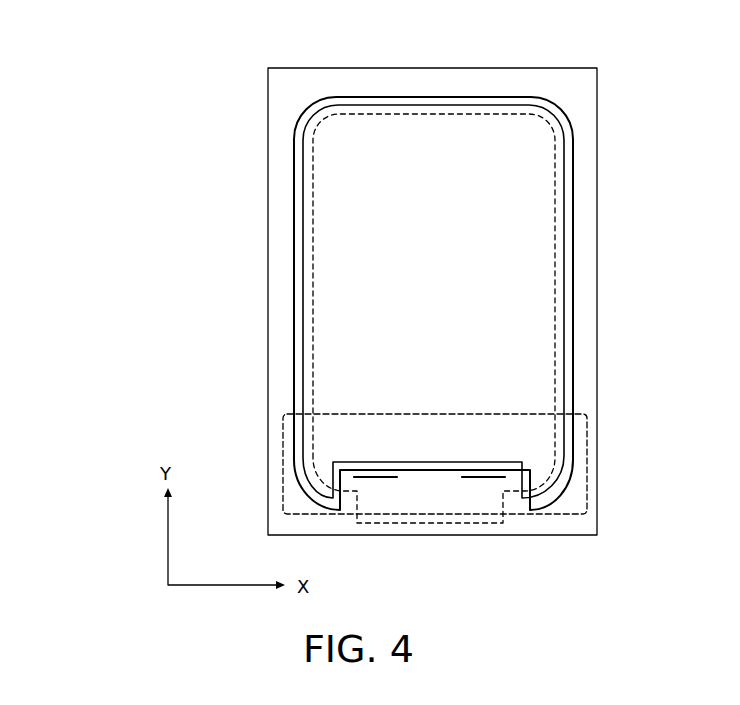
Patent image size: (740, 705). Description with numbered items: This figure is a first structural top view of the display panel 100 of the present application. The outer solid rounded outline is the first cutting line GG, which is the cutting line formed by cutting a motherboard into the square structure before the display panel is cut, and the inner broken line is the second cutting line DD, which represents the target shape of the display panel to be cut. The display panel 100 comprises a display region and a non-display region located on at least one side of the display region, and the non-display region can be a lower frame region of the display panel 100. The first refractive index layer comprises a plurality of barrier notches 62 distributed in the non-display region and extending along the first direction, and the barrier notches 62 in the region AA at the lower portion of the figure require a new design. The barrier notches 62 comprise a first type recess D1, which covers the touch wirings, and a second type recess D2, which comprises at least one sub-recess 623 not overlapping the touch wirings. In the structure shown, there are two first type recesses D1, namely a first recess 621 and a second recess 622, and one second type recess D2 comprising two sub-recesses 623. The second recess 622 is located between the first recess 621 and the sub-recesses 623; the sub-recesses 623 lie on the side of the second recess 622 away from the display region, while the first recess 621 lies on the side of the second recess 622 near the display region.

The display panel 100 is at (258, 40).
The barrier notches 62 is at (97, 337).
The first recess 621 is at (303, 231).
The second recess 622 is at (294, 180).
The sub-recess 623 is at (376, 479).
The first cutting line GG is at (268, 126).
The second cutting line DD is at (557, 213).
The region AA is at (587, 458).
The first type recess D1 is at (170, 308).
The second type recess D2 is at (170, 377).